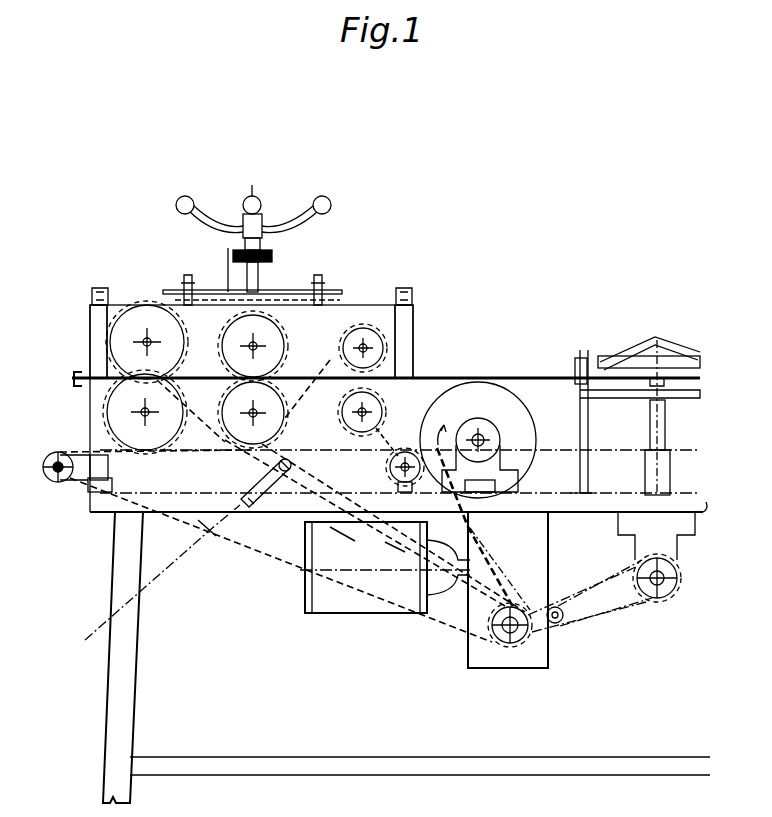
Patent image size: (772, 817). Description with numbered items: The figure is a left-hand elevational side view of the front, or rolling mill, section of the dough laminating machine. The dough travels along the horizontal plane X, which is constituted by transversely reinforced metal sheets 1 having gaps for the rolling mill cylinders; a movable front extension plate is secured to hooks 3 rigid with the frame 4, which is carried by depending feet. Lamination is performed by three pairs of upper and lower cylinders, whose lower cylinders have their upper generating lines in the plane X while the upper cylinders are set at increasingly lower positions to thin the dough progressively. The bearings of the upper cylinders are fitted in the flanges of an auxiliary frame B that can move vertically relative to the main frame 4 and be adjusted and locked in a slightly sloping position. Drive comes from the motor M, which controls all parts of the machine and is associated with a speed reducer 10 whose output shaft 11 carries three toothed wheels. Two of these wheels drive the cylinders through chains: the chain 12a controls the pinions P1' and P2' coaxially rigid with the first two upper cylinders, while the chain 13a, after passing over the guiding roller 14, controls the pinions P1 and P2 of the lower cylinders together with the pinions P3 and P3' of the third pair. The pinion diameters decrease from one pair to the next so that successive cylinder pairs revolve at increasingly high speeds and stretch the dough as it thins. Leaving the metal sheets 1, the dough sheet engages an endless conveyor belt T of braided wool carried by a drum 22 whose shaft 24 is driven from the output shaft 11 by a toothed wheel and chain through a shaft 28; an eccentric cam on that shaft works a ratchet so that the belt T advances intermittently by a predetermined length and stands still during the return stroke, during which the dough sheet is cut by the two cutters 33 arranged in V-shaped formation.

The metal sheets 1 is at (398, 348).
The auxiliary frame B is at (92, 332).
The horizontal plane X— X is at (386, 367).
The hooks 3 is at (72, 386).
The pinion P'1 P1' is at (145, 292).
The pinion P'2 P2' is at (323, 291).
The pinion P'3 P3' is at (428, 312).
The pinion P1 is at (118, 412).
The pinion P2 is at (242, 505).
The pinion P3 is at (396, 390).
The guiding roller 14 is at (58, 484).
The frame 4 is at (118, 586).
The motor M is at (302, 606).
The chain 12a is at (396, 548).
The chain 13a is at (574, 540).
The drum 22 is at (470, 395).
The shaft of the drum 24 is at (483, 436).
The output shaft 11 is at (500, 638).
The speed reducer 10 is at (560, 624).
The shaft 28 is at (660, 582).
The endless conveyor belt T is at (555, 382).
The cutters 33 is at (640, 346).